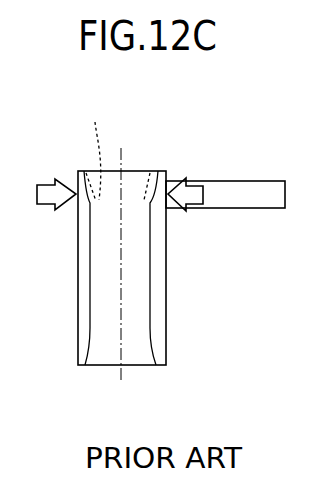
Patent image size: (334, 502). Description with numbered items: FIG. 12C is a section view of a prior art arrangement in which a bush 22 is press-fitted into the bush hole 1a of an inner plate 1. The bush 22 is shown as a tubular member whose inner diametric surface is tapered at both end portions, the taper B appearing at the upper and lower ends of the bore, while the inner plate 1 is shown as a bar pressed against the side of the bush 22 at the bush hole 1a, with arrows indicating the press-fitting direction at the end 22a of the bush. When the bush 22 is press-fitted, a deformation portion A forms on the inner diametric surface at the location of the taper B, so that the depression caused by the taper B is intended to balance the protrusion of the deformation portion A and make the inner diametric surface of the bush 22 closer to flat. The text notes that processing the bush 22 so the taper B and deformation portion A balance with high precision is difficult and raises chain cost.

The inner plate 1 is at (237, 185).
The bush hole 1a is at (155, 188).
The bush 22 is at (78, 230).
The opening end of tubular member 22a is at (82, 188).
The deformation portion A is at (93, 150).
The taper B is at (92, 180).